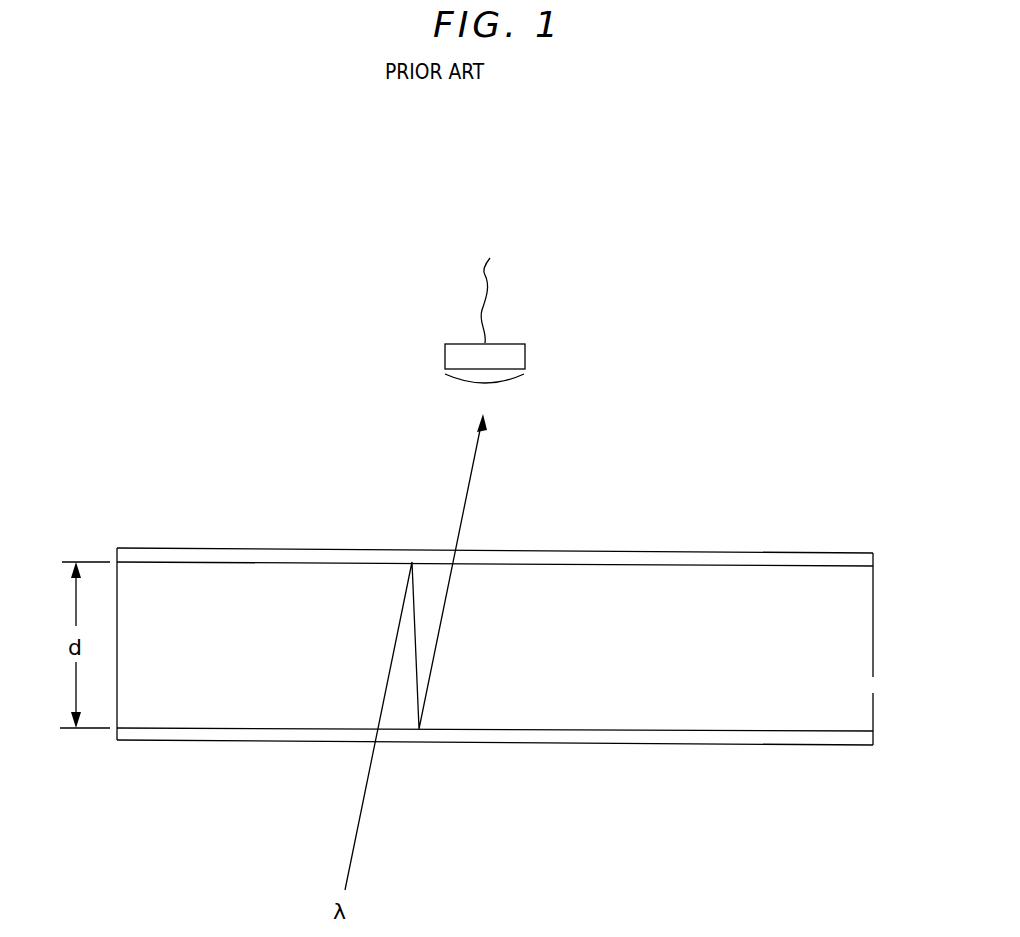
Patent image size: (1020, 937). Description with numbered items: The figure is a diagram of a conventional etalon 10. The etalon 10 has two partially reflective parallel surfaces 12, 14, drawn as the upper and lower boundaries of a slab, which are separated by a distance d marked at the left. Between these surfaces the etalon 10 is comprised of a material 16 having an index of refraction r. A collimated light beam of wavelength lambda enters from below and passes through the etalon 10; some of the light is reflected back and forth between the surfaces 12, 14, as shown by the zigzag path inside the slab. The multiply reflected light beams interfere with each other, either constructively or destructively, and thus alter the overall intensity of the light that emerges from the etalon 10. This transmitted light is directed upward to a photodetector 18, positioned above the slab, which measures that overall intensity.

The etalon 10 is at (269, 232).
The partially reflective parallel surface 12 is at (787, 560).
The partially reflective parallel surface 14 is at (785, 738).
The material 16 is at (840, 652).
The photodetector 18 is at (526, 357).